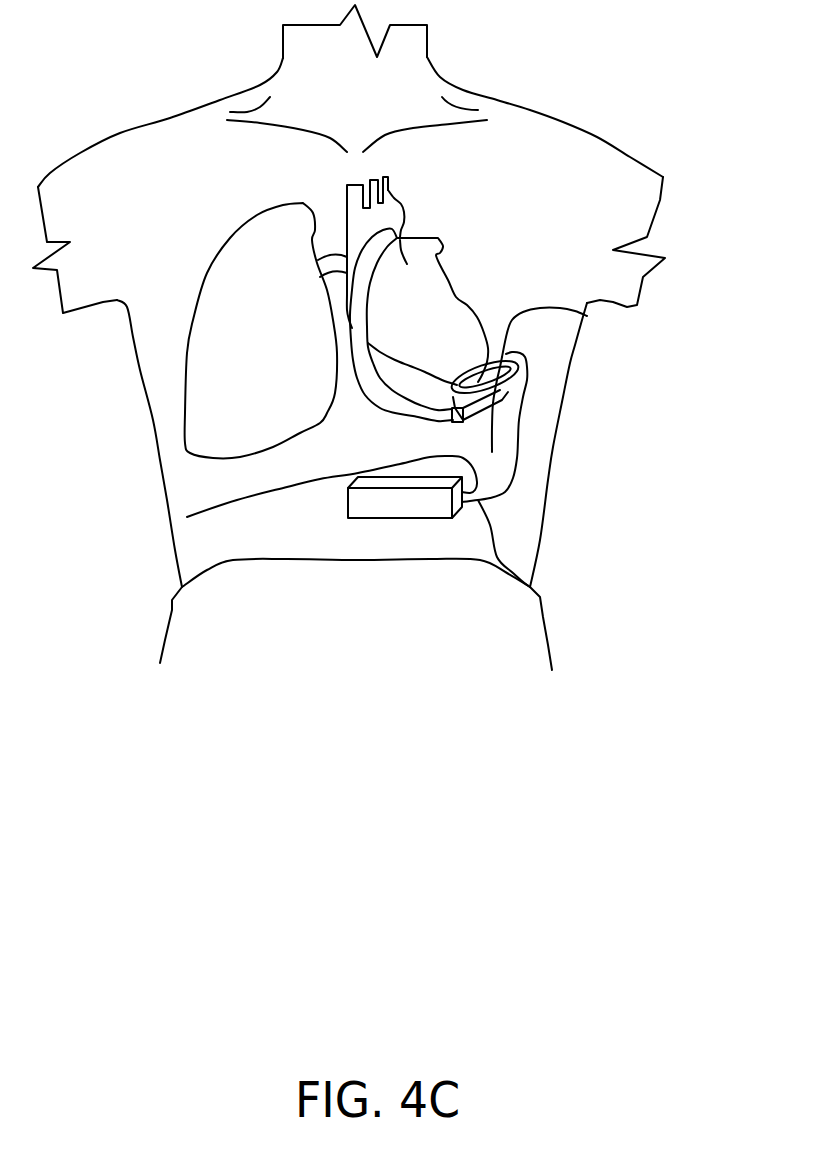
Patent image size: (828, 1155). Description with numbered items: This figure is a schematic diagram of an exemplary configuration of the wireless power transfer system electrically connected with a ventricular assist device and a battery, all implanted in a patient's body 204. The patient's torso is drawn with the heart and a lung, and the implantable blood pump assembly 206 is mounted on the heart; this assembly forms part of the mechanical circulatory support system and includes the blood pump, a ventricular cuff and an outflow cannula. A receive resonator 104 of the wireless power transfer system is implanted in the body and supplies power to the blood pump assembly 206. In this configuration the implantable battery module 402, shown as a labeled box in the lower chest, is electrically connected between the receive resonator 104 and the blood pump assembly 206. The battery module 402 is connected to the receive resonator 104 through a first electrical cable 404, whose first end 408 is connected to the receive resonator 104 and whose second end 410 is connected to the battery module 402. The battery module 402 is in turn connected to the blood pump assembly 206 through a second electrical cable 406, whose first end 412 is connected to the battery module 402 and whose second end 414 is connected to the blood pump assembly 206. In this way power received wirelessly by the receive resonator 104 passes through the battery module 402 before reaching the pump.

The receive resonator 104 is at (600, 300).
The patient's body 204 is at (543, 527).
The implantable blood pump assembly 206 is at (385, 400).
The implantable battery module 402 is at (427, 516).
The first electrical cable 404 is at (520, 427).
The second electrical cable 406 is at (492, 452).
The first end of the first electrical cable 408 is at (530, 587).
The second end of the first electrical cable 410 is at (520, 370).
The first end of the second electrical cable 412 is at (187, 517).
The second end of the second electrical cable 414 is at (510, 395).